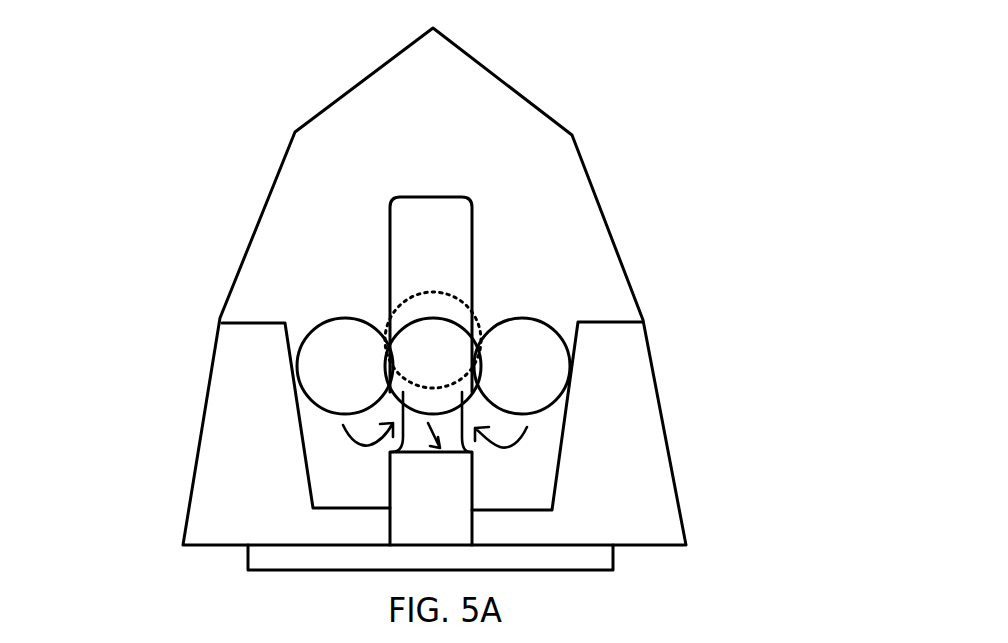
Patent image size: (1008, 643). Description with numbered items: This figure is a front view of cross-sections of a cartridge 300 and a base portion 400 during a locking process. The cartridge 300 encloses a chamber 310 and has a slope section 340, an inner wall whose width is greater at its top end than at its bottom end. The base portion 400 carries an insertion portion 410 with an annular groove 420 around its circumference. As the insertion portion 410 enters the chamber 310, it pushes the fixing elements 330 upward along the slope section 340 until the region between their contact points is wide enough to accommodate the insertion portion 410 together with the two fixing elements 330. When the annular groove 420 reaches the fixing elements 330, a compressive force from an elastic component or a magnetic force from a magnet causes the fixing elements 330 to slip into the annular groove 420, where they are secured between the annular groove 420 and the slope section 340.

The cartridge 300 is at (247, 215).
The chamber 310 is at (473, 175).
The fixing elements 330 is at (537, 353).
The slope section 340 is at (460, 452).
The base portion 400 is at (238, 558).
The insertion portion 410 is at (450, 258).
The annular groove 420 is at (575, 410).